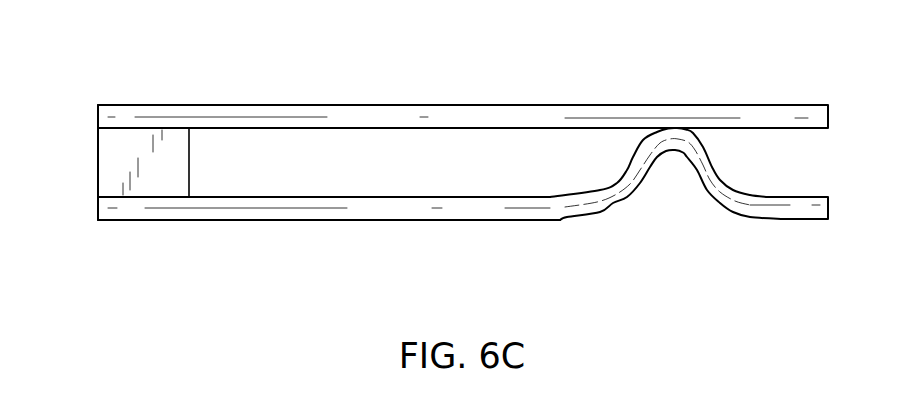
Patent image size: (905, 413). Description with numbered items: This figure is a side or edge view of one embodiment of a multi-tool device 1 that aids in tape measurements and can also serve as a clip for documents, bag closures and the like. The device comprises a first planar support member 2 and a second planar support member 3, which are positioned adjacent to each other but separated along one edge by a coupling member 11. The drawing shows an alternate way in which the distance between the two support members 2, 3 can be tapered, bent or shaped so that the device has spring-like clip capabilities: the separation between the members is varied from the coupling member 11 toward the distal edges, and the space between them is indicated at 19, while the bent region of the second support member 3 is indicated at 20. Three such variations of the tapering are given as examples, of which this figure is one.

The electrostatic chuck / laminated structure 1 is at (423, 156).
The first planar support member 2 is at (527, 108).
The second planar support member 3 is at (463, 185).
The coupling member 11 is at (118, 162).
The gap / space between layers 19 is at (583, 152).
The bent portion of lower layer 20 is at (690, 148).